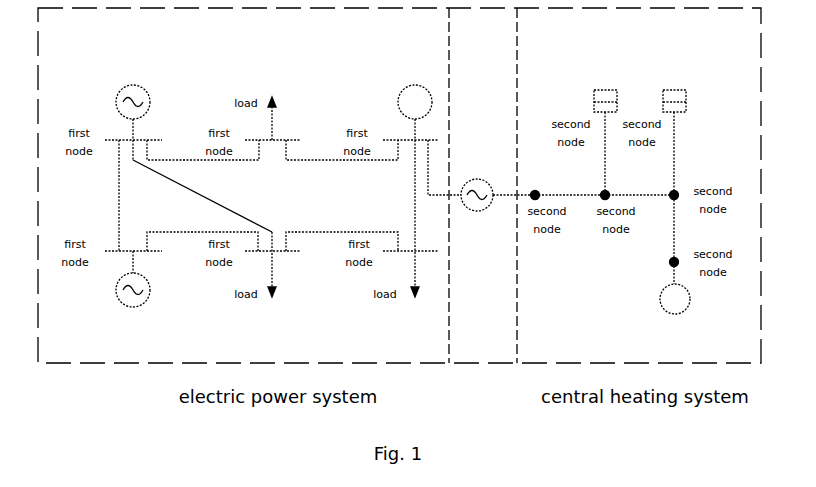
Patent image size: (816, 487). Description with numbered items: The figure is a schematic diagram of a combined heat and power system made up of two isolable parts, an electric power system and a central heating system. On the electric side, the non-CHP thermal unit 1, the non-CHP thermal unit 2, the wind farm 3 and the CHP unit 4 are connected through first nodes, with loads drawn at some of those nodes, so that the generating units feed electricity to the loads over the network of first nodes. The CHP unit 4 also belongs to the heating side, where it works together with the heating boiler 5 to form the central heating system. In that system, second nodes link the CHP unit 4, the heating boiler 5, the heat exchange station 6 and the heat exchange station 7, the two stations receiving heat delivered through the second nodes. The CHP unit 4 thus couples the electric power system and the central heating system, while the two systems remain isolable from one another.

The non-CHP thermal unit 1 is at (133, 312).
The non-CHP thermal unit 2 is at (132, 81).
The wind farm 3 is at (405, 76).
The CHP unit 4 is at (482, 220).
The heating boiler 5 is at (644, 292).
The heat exchange station 6 is at (594, 67).
The heat exchange station 7 is at (682, 67).